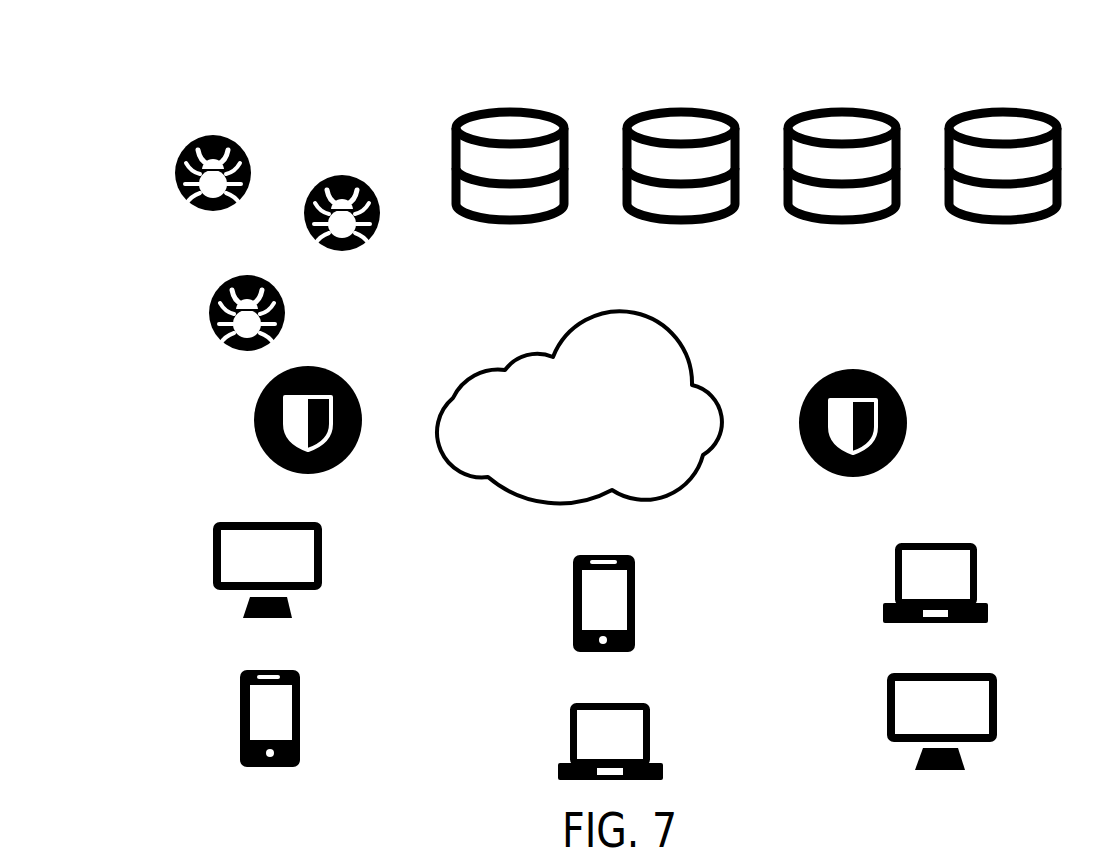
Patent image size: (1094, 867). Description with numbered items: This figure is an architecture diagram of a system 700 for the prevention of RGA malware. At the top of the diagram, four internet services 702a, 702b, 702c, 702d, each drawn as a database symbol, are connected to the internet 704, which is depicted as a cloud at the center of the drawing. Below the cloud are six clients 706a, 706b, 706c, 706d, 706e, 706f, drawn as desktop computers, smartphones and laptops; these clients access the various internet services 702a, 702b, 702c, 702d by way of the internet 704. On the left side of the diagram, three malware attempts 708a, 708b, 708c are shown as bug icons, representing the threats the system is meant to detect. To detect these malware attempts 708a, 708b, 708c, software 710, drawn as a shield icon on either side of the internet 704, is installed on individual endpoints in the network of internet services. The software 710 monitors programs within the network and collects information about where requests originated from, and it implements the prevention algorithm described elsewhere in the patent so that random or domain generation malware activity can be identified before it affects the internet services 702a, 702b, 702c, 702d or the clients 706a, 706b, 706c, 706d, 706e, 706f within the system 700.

The system 700 is at (203, 83).
The internet service 702a is at (530, 84).
The internet service 702b is at (700, 87).
The internet service 702c is at (859, 91).
The internet service 702d is at (1010, 91).
The internet 704 is at (707, 320).
The client 706a is at (285, 511).
The client 706b is at (628, 537).
The client 706c is at (949, 524).
The client 706d is at (290, 662).
The client 706e is at (631, 689).
The client 706f is at (957, 669).
The malware attempt 708a is at (238, 129).
The malware attempt 708b is at (368, 172).
The malware attempt 708c is at (277, 270).
The software 710 is at (318, 362).